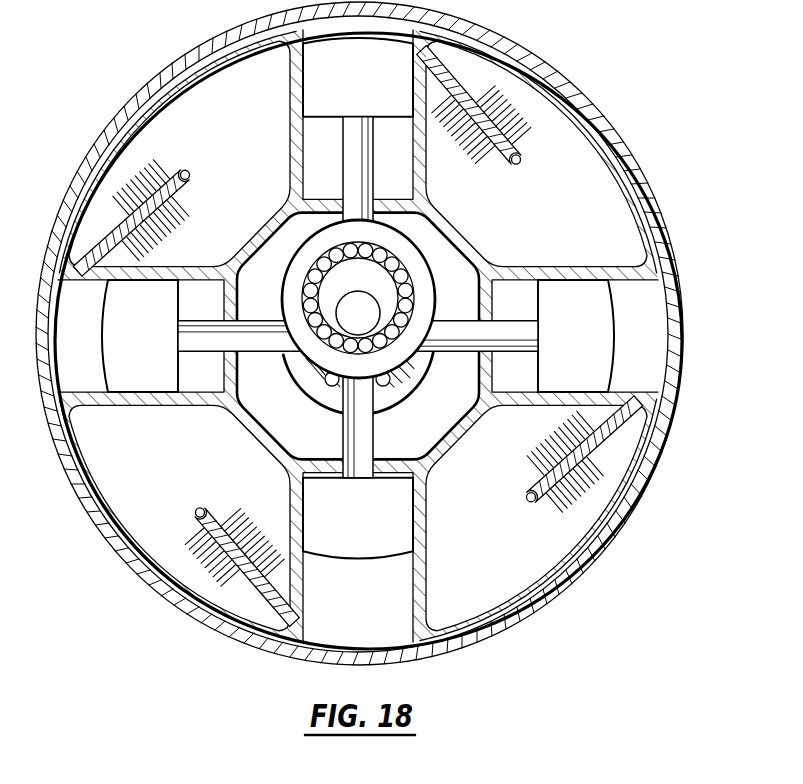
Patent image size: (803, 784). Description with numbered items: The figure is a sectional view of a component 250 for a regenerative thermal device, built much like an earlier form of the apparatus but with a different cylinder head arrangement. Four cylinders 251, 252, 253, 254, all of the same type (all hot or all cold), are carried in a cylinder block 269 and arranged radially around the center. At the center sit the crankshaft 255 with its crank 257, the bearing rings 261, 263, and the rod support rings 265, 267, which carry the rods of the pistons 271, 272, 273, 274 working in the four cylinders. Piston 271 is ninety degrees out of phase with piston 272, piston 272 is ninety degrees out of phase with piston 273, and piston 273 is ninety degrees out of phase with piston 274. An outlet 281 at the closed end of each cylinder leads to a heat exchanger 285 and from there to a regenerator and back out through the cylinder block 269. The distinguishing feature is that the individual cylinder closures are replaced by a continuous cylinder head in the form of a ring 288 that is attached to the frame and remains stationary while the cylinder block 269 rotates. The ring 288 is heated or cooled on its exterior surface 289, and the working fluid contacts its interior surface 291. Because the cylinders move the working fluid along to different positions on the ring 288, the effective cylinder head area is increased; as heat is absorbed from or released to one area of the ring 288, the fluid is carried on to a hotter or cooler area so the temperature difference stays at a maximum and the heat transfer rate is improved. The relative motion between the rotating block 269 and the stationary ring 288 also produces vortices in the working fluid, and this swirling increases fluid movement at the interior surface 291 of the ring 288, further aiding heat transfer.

The component 250 is at (369, 333).
The exterior surface 289 is at (614, 137).
The ring 288 is at (660, 221).
The interior surface 291 is at (621, 177).
The cylinder 251 is at (290, 96).
The cylinder 252 is at (604, 246).
The cylinder 253 is at (425, 565).
The cylinder 254 is at (120, 408).
The cylinder block 269 is at (458, 220).
The outlet 281 is at (630, 398).
The heat exchanger 285 is at (523, 493).
The piston 271 is at (385, 94).
The piston 272 is at (600, 344).
The piston 273 is at (383, 556).
The piston 274 is at (160, 374).
The rod support ring 265 is at (420, 281).
The bearing ring 261 is at (403, 308).
The crank 257 is at (323, 295).
The crankshaft 255 is at (374, 281).
The rod support ring 267 is at (410, 382).
The bearing ring 263 is at (390, 382).